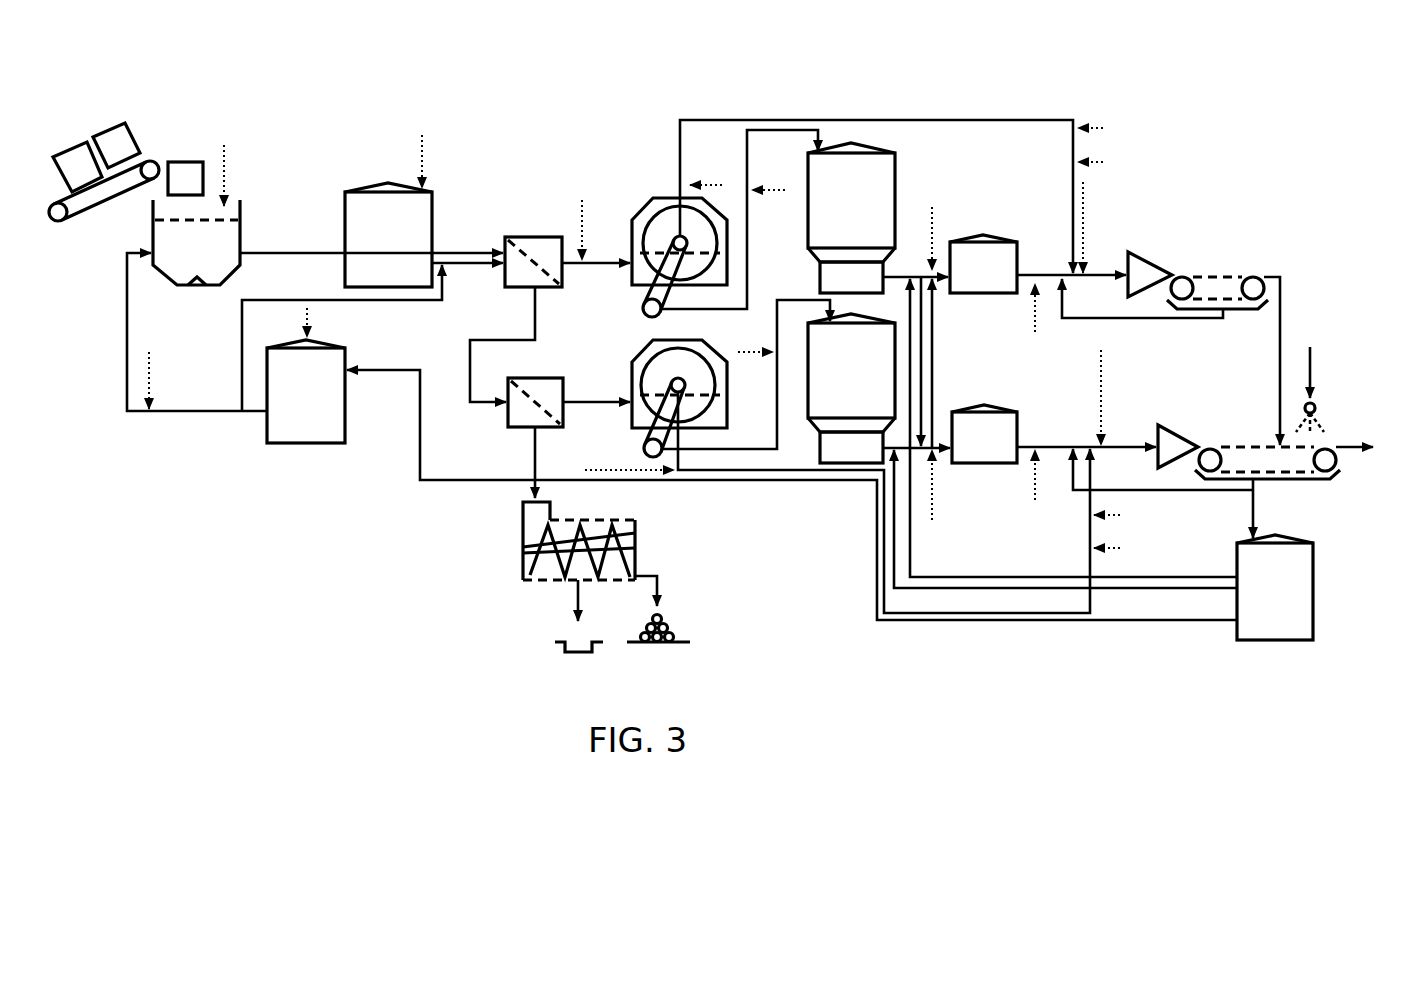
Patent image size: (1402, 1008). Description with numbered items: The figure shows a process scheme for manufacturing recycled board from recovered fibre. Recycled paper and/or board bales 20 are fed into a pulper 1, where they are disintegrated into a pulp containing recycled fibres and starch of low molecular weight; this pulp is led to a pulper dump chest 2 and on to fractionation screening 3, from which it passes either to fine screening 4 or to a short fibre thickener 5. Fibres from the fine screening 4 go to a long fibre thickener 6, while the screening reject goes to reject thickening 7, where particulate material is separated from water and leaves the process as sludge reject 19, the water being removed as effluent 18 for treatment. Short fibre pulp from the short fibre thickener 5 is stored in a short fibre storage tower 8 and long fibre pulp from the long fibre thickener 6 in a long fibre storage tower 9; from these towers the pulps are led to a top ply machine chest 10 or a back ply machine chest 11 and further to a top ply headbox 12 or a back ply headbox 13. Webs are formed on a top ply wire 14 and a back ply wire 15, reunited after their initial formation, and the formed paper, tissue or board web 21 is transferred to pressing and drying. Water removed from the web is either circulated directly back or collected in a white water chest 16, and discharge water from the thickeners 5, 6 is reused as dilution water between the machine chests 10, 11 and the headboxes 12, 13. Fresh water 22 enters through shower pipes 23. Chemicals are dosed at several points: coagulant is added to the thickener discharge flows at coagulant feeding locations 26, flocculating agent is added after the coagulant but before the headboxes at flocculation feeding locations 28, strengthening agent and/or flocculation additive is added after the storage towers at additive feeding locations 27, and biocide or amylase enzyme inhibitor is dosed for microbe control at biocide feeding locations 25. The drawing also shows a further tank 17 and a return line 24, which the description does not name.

The pulper 1 is at (242, 230).
The pulper dump chest 2 is at (372, 188).
The fractionation screening 3 is at (548, 238).
The fine screening 4 is at (551, 377).
The short fibre thickener 5 is at (666, 194).
The long fibre thickener 6 is at (728, 365).
The reject thickening 7 is at (636, 532).
The short fibre storage tower 8 is at (897, 170).
The long fibre storage tower 9 is at (877, 322).
The top ply machine chest 10 is at (1019, 250).
The back ply machine chest 11 is at (1019, 420).
The top ply headbox 12 is at (1132, 250).
The back ply headbox 13 is at (1165, 422).
The top ply wire 14 is at (1236, 275).
The back ply wire 15 is at (1230, 443).
The white water chest 16 is at (1298, 540).
The water tank 17 is at (288, 345).
The effluent 18 is at (572, 610).
The sludge reject 19 is at (660, 590).
The recycled paper and/or board bales 20 is at (134, 131).
The formed paper, tissue or board web 21 is at (1350, 444).
The fresh water 22 is at (1313, 350).
The shower pipes 23 is at (1318, 402).
The recirculation line 24 is at (124, 333).
The biocide feeding locations 25 is at (228, 150).
The coagulant feeding locations 26 is at (1106, 128).
The additive feeding locations 27 is at (936, 210).
The flocculation feeding locations 28 is at (1106, 162).